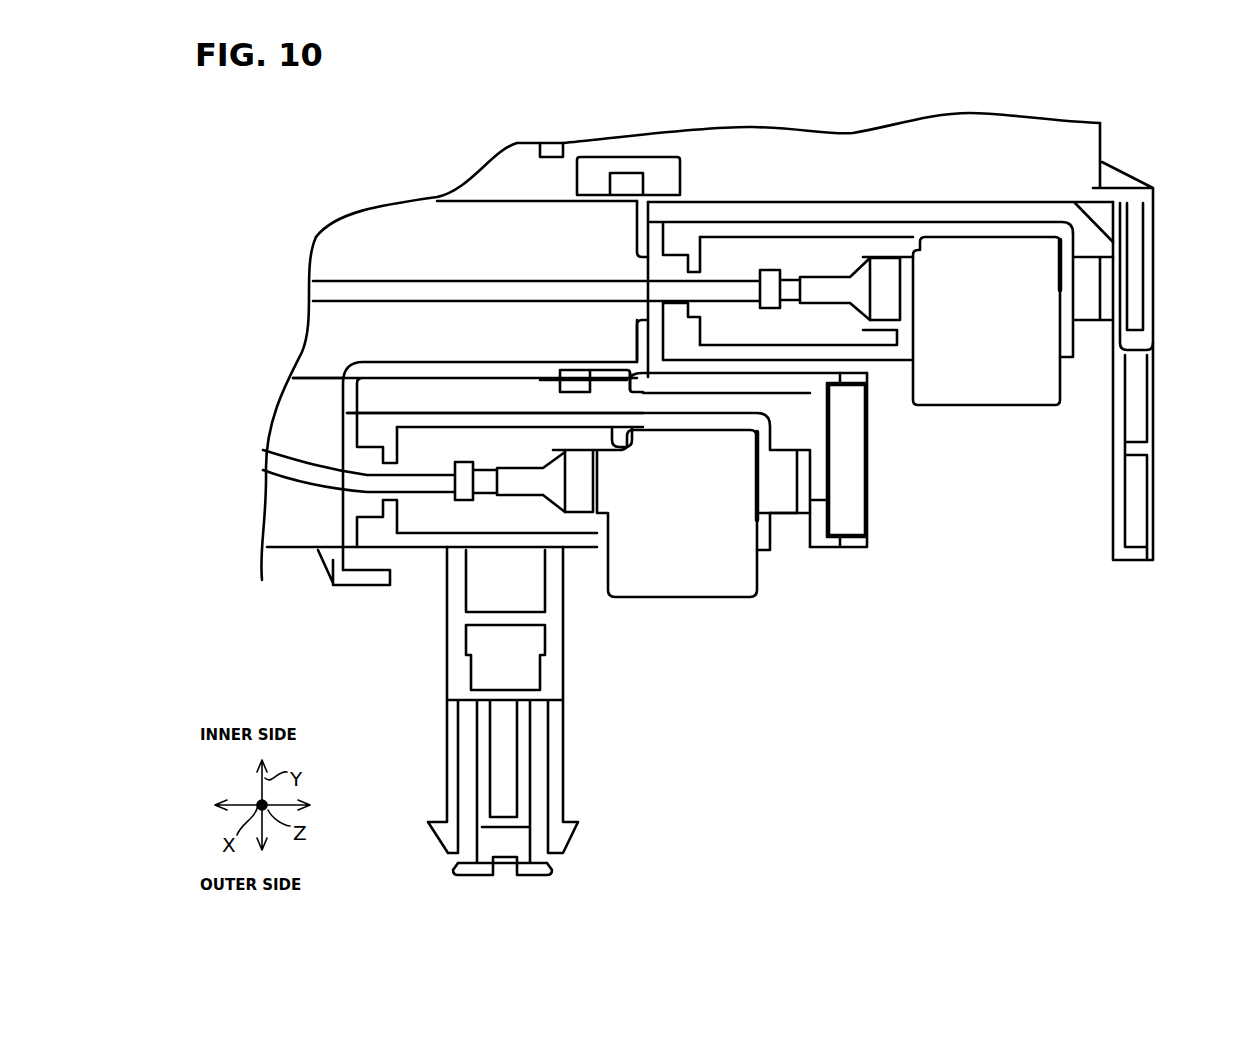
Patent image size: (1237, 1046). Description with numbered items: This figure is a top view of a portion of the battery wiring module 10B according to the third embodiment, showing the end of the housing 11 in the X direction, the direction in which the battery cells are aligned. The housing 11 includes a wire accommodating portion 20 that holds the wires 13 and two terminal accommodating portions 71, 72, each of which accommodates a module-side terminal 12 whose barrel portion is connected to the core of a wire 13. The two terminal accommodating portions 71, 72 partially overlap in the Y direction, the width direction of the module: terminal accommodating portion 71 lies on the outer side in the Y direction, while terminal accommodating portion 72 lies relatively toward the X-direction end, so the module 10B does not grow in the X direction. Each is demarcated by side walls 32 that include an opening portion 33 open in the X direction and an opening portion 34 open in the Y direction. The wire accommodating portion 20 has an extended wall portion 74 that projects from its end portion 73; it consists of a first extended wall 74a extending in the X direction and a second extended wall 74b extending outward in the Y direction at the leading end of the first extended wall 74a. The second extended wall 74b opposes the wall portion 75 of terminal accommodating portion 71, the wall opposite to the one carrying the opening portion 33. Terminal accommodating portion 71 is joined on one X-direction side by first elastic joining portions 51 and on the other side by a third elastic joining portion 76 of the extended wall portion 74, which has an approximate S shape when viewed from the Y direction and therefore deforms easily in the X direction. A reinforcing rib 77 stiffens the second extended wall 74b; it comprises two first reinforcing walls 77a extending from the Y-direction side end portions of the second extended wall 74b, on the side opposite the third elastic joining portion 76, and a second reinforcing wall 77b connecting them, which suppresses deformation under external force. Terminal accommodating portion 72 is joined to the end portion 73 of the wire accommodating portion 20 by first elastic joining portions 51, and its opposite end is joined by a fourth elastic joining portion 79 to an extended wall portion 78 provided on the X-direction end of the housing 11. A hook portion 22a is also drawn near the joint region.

The battery wiring module 10B is at (1129, 660).
The housing 11 is at (1085, 143).
The module-side terminal 12 is at (1015, 405).
The wire 13 is at (499, 290).
The wire accommodating portion 20 is at (598, 213).
The hook portion 22a is at (640, 260).
The side wall 32 is at (767, 228).
The opening portion 33 is at (400, 490).
The opening portion 34 is at (1057, 350).
The first elastic joining portion 51 is at (688, 222).
The terminal accommodating portion 71 is at (437, 413).
The terminal accommodating portion 72 is at (905, 228).
The end portion 73 is at (637, 340).
The extended wall portion 74 is at (643, 392).
The first extended wall 74a is at (760, 385).
The second extended wall 74b is at (825, 505).
The wall portion 75 is at (762, 548).
The third elastic joining portion 76 is at (790, 513).
The reinforcing rib 77 is at (858, 470).
The first reinforcing wall 77a is at (863, 383).
The second reinforcing wall 77b is at (865, 432).
The extended wall portion 78 is at (1120, 245).
The fourth elastic joining portion 79 is at (1090, 288).